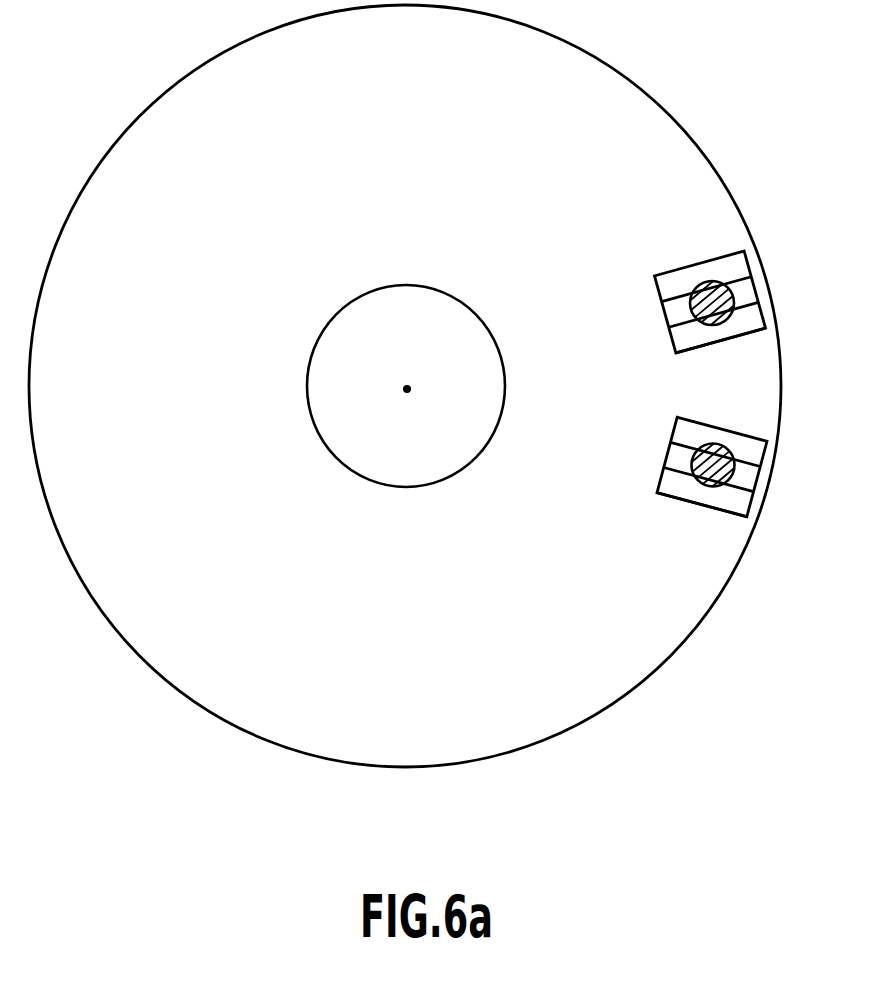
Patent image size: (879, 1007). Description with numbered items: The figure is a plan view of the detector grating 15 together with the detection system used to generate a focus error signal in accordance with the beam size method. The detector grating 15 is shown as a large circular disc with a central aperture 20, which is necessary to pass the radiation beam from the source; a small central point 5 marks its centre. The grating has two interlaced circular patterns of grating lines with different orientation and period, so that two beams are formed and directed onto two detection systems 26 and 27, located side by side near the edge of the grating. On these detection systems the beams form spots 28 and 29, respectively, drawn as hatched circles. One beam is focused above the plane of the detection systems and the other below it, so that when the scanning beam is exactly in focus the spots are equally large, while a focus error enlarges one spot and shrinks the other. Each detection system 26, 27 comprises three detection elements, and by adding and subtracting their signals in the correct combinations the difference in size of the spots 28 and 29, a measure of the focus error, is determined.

The center of rotation 5 is at (404, 387).
The detector grating 15 is at (178, 678).
The aperture 20 is at (362, 475).
The detection system 26 is at (681, 299).
The spot 28 is at (721, 325).
The detection system 27 is at (682, 472).
The spot 29 is at (703, 488).